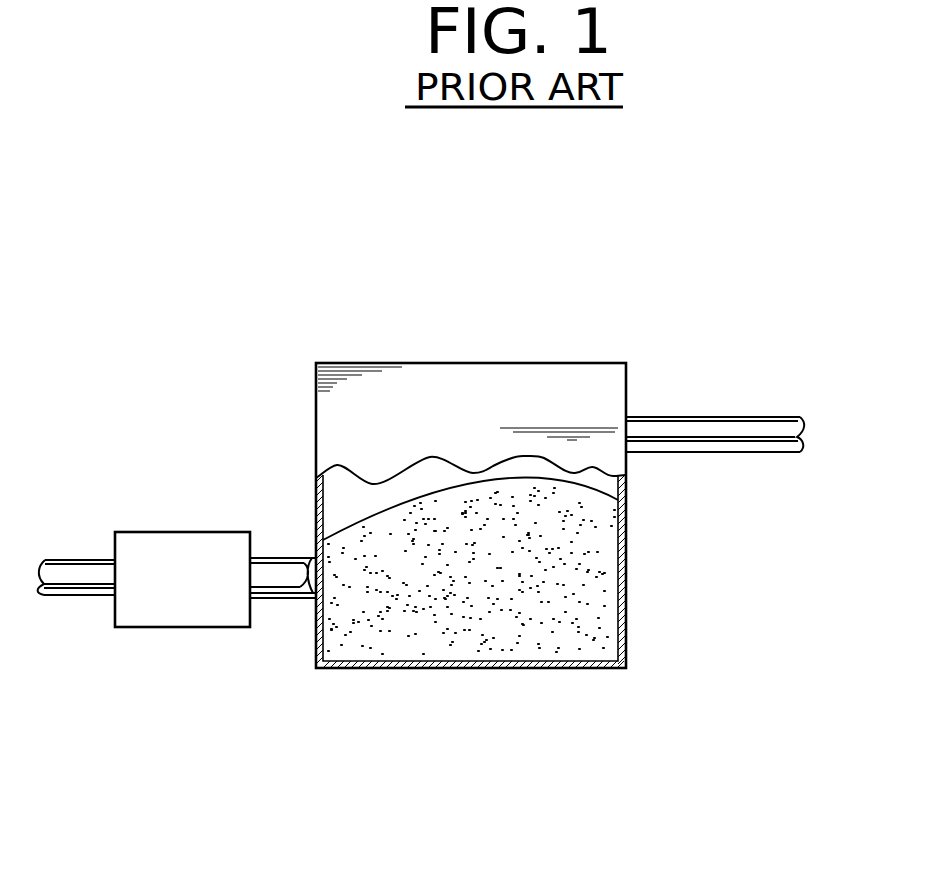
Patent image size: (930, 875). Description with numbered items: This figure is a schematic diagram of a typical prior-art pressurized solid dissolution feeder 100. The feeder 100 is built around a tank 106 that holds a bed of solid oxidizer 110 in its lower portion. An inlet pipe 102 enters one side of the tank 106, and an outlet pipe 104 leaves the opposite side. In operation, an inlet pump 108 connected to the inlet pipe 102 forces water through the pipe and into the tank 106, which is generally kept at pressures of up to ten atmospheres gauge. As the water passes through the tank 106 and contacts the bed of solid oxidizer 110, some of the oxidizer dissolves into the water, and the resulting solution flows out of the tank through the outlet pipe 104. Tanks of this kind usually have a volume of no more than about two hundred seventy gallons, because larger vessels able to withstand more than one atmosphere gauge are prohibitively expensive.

The pressurized solid dissolution feeder 100 is at (361, 340).
The inlet pipe 102 is at (287, 595).
The outlet pipe 104 is at (757, 425).
The tank 106 is at (592, 383).
The inlet pump 108 is at (130, 535).
The bed of solid oxidizer 110 is at (548, 632).